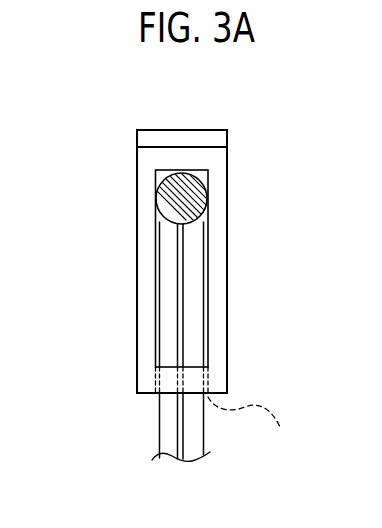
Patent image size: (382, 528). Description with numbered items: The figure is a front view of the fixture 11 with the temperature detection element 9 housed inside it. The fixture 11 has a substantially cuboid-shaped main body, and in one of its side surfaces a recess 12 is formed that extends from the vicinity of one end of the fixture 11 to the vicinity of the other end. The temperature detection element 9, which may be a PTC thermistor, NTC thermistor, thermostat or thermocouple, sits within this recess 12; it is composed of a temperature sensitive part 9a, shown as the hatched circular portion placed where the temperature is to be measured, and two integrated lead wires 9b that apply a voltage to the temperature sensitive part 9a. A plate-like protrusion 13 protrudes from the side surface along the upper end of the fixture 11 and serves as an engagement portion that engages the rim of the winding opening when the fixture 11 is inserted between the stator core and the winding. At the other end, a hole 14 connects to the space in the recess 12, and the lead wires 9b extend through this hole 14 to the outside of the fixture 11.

The temperature detection element 9 is at (190, 292).
The temperature sensitive part 9a is at (199, 201).
The lead wires 9b is at (165, 428).
The fixture 11 is at (137, 278).
The recess 12 is at (207, 172).
The protrusion 13 is at (147, 140).
The hole 14 is at (252, 428).